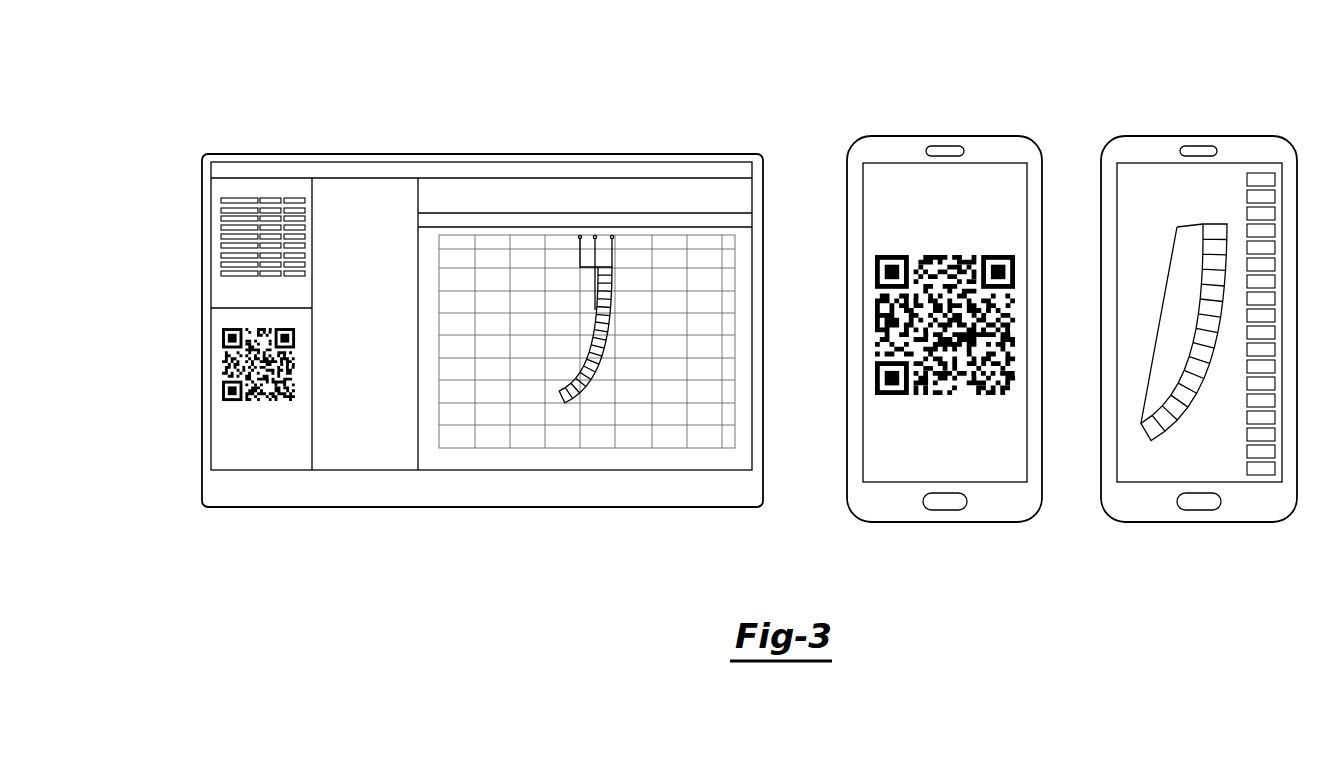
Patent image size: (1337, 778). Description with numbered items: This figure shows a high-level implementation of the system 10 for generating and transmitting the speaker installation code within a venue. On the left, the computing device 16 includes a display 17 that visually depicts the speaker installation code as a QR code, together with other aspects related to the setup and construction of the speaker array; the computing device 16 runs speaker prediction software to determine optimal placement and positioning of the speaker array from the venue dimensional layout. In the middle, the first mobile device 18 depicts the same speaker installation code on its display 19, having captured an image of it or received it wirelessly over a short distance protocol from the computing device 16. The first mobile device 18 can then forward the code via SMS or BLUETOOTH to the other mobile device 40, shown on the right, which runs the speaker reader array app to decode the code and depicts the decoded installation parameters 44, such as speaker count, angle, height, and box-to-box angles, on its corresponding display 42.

The system 10 is at (750, 48).
The computing device 16 is at (358, 160).
The display 17 is at (482, 153).
The first mobile device 18 is at (945, 136).
The display 19 is at (888, 219).
The other mobile device 40 is at (1198, 136).
The display 42 is at (1142, 243).
The decoded installation parameters 44 is at (1146, 330).